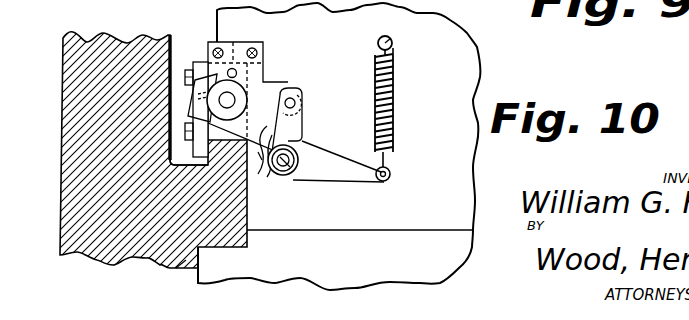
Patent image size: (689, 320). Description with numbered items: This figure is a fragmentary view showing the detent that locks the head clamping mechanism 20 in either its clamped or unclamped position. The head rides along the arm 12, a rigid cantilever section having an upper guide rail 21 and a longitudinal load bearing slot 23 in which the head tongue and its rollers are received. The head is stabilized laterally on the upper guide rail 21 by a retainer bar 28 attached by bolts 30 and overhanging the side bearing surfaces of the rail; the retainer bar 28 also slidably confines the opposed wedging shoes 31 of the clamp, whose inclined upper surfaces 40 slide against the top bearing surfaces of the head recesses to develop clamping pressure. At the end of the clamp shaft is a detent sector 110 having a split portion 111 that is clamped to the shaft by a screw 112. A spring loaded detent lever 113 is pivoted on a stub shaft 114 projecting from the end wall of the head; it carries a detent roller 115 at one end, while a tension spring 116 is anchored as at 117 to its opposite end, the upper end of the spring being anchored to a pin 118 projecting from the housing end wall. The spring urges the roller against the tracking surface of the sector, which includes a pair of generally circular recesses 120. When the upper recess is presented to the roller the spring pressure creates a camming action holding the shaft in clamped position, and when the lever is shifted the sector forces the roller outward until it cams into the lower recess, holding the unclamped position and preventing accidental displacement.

The arm 12 is at (63, 38).
The head clamping mechanism 20 is at (241, 74).
The upper guide rail 21 is at (247, 212).
The load bearing slot 23 is at (176, 267).
The retainer bar 28 is at (203, 67).
The bolts 30 is at (186, 128).
The wedging shoes 31 is at (263, 73).
The inclined upper surfaces 40 is at (234, 63).
The detent sector 110 is at (258, 152).
The split portion 111 is at (196, 99).
The screw 112 is at (247, 107).
The detent lever 113 is at (340, 166).
The stub shaft 114 is at (291, 171).
The detent roller 115 is at (302, 107).
The tension spring 116 is at (396, 100).
The spring anchor 117 is at (388, 179).
The pin 118 is at (391, 38).
The circular recesses 120 is at (288, 87).